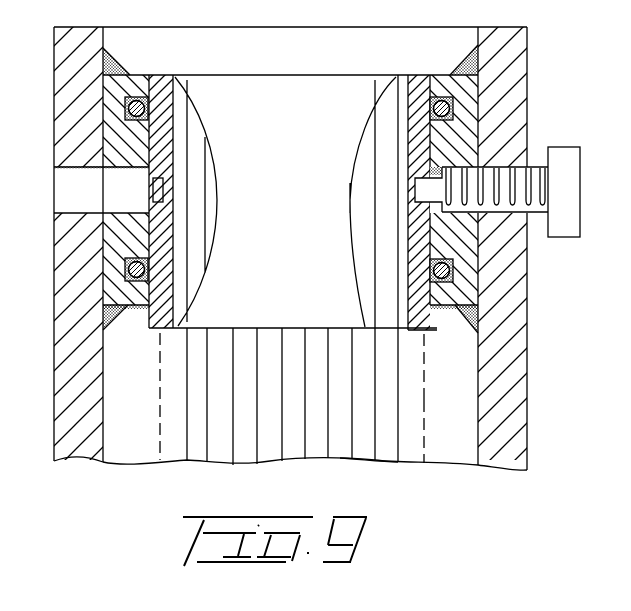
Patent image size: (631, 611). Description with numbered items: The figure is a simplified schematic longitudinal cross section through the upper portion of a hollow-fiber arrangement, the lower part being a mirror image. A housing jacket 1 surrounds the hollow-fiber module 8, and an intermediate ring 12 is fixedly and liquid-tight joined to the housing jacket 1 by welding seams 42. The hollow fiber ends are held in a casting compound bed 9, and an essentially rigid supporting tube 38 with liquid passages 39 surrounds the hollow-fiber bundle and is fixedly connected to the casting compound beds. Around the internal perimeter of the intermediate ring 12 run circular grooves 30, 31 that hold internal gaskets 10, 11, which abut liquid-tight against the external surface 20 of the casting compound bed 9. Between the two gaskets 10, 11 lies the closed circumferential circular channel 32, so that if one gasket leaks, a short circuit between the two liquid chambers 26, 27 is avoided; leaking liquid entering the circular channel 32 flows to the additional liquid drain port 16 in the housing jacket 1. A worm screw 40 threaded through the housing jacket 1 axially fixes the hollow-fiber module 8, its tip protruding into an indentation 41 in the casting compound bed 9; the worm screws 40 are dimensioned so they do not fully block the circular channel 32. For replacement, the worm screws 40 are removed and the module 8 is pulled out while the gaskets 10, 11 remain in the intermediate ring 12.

The housing jacket 1 is at (527, 330).
The hollow-fiber module 8 is at (387, 448).
The casting compound bed 9 is at (414, 88).
The internal gasket 10 is at (442, 98).
The internal gasket 11 is at (453, 284).
The intermediate ring 12 is at (473, 92).
The liquid drain port 16 is at (88, 201).
The external surface 20 is at (149, 243).
The liquid chamber 26 is at (304, 59).
The liquid chamber 27 is at (144, 403).
The circular groove 30 is at (127, 101).
The circular groove 31 is at (128, 274).
The circular channel 32 is at (138, 208).
The supporting tube 38 is at (425, 382).
The liquid passages 39 is at (426, 433).
The worm screw 40 is at (580, 186).
The indentation 41 is at (152, 178).
The welding seam 42 is at (111, 67).